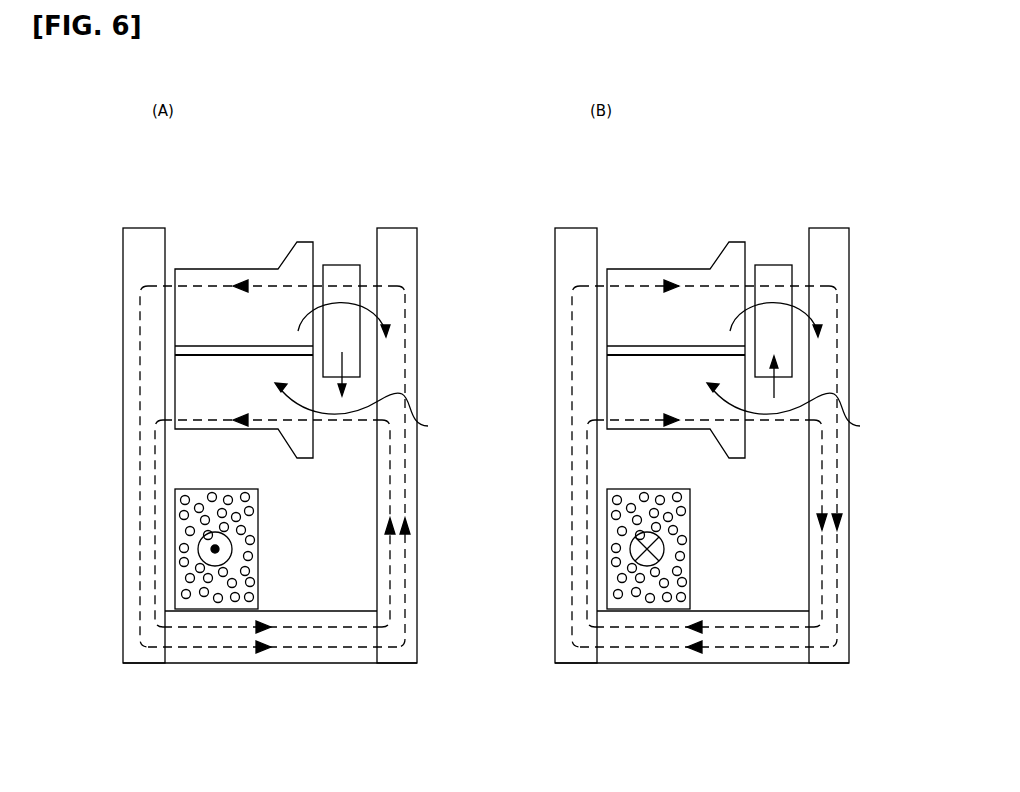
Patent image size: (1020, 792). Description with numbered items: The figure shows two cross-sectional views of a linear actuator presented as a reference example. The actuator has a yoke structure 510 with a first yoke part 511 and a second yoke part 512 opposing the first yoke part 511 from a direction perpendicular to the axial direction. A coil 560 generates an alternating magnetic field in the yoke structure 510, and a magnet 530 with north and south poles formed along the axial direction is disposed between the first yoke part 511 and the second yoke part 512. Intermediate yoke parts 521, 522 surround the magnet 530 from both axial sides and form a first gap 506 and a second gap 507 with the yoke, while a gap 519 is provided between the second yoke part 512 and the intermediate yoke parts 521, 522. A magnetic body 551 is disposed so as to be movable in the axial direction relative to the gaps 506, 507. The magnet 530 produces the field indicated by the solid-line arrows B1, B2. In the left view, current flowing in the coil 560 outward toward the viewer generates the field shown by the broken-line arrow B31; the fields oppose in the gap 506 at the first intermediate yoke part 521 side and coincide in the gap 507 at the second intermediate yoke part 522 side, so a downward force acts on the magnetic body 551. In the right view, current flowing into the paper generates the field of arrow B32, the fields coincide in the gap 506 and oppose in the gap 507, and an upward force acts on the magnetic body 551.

The yoke structure 510 is at (120, 661).
The second yoke part 512 is at (123, 268).
The first gap 506 is at (352, 257).
The first intermediate yoke part 521 is at (216, 269).
The magnet 530 is at (175, 345).
The second intermediate yoke part 522 is at (175, 385).
The gap 519 is at (165, 316).
The magnetic body 551 is at (330, 265).
The first yoke part 511 is at (410, 335).
The second gap 507 is at (353, 386).
The coil 560 is at (182, 560).
The solid-line arrow B1 is at (388, 317).
The solid-line arrow B2 is at (527, 410).
The broken-line arrow B31 is at (405, 650).
The broken-line arrow B32 is at (837, 650).